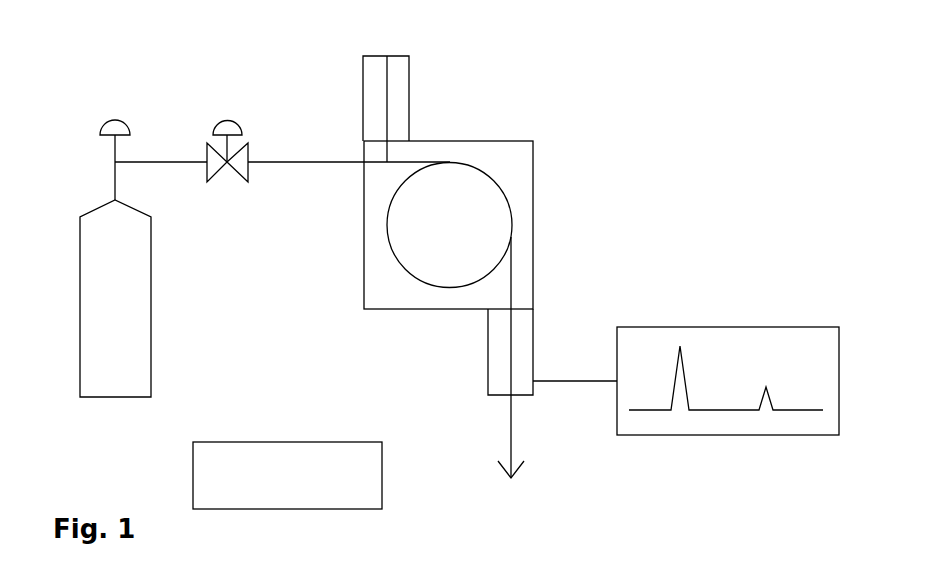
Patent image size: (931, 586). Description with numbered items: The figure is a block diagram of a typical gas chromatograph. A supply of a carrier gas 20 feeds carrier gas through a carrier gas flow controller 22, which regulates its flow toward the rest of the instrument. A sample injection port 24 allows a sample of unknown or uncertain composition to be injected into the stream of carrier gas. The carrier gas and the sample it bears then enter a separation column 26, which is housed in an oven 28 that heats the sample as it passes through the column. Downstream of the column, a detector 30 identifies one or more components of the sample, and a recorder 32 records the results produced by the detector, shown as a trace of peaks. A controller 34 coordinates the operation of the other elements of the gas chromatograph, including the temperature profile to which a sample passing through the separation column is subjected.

The supply of a carrier gas 20 is at (78, 275).
The carrier gas flow controller 22 is at (225, 113).
The sample injection port 24 is at (415, 88).
The separation column 26 is at (505, 187).
The oven 28 is at (357, 262).
The detector 30 is at (480, 356).
The recorder 32 is at (777, 315).
The controller 34 is at (268, 510).